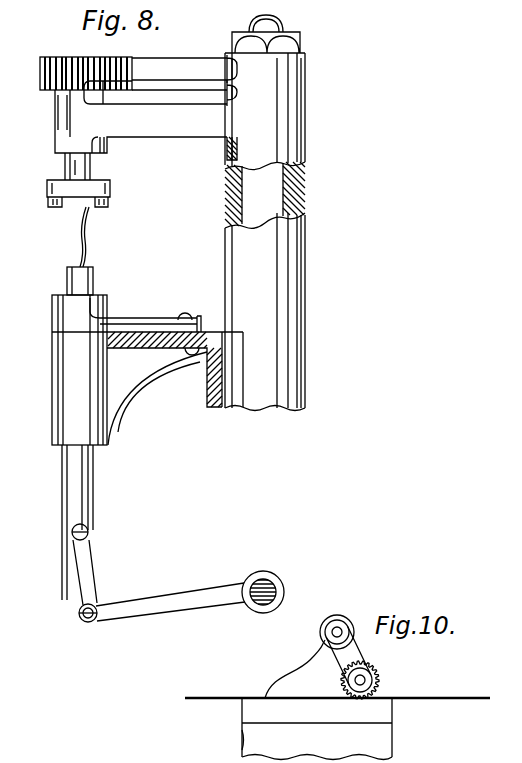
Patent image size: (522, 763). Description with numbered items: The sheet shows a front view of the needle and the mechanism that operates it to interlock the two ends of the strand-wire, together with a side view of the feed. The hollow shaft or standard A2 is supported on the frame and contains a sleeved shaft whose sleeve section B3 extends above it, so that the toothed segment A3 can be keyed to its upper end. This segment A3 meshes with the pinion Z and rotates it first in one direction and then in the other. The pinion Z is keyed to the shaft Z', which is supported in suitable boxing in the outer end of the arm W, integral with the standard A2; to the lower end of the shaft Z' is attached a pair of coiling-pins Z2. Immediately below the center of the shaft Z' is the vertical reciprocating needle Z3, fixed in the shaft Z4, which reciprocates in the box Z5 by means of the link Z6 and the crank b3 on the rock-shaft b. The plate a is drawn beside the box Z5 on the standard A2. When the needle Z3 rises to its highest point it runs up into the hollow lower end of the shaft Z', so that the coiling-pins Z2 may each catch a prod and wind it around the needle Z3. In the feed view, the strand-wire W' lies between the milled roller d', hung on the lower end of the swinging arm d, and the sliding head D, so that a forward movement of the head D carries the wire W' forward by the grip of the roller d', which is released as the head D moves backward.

In FIG. 8, the pinion Z is at (74, 73).
In FIG. 8, the shaft Z' is at (87, 175).
In FIG. 8, the coiling-pins Z2 is at (118, 204).
In FIG. 8, the needle Z3 is at (88, 252).
In FIG. 8, the shaft Z4 is at (94, 288).
In FIG. 8, the box Z5 is at (129, 370).
In FIG. 8, the link Z6 is at (90, 574).
In FIG. 8, the hollow shaft or standard A2 is at (265, 213).
In FIG. 8, the toothed segment A3 is at (160, 80).
In FIG. 8, the sleeve section B3 is at (265, 195).
In FIG. 8, the arm W is at (146, 125).
In FIG. 8, the plate a is at (175, 369).
In FIG. 8, the rock-shaft b is at (272, 586).
In FIG. 8, the crank b3 is at (162, 602).
In FIG. 10, the swinging arm d is at (318, 656).
In FIG. 10, the milled roller d' is at (377, 680).
In FIG. 10, the strand-wire W' is at (337, 690).
In FIG. 10, the sliding head D is at (317, 729).